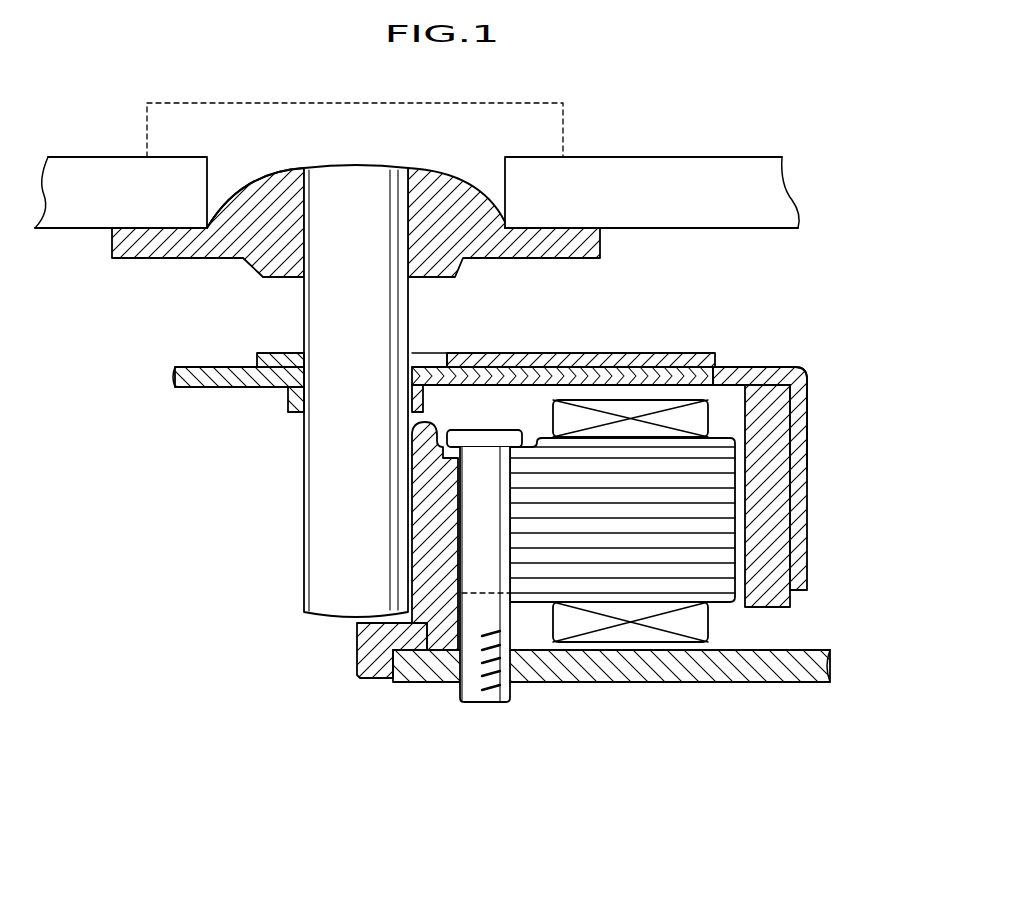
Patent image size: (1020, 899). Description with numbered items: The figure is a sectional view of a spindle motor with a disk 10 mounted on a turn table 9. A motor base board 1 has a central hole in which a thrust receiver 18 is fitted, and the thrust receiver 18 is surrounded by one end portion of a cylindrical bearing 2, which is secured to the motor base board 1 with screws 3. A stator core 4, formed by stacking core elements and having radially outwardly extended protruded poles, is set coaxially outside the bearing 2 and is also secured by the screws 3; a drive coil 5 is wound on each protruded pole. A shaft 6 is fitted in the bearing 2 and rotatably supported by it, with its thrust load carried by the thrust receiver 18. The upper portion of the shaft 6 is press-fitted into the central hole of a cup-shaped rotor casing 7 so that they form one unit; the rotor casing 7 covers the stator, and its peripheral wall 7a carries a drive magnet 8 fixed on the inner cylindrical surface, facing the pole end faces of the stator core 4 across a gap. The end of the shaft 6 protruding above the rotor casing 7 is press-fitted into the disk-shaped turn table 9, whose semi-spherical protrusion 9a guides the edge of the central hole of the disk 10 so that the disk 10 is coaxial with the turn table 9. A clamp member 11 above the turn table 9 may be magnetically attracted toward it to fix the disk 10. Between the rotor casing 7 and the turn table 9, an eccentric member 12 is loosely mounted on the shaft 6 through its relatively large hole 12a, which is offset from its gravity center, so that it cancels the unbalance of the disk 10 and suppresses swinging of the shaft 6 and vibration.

The motor base board 1 is at (623, 673).
The cylindrical bearing 2 is at (432, 425).
The screws 3 is at (476, 705).
The stator core 4 is at (722, 540).
The drive coil 5 is at (650, 405).
The shaft 6 is at (317, 509).
The rotor casing 7 is at (757, 368).
The rotor yoke peripheral wall 7a is at (805, 410).
The drive magnet 8 is at (785, 482).
The turn table 9 is at (378, 192).
The semi-spherical protrusion 9a is at (252, 185).
The disk 10 is at (738, 160).
The clamp member 11 is at (563, 122).
The eccentric member 12 is at (444, 353).
The hole 12a is at (435, 353).
The thrust receiver 18 is at (357, 650).